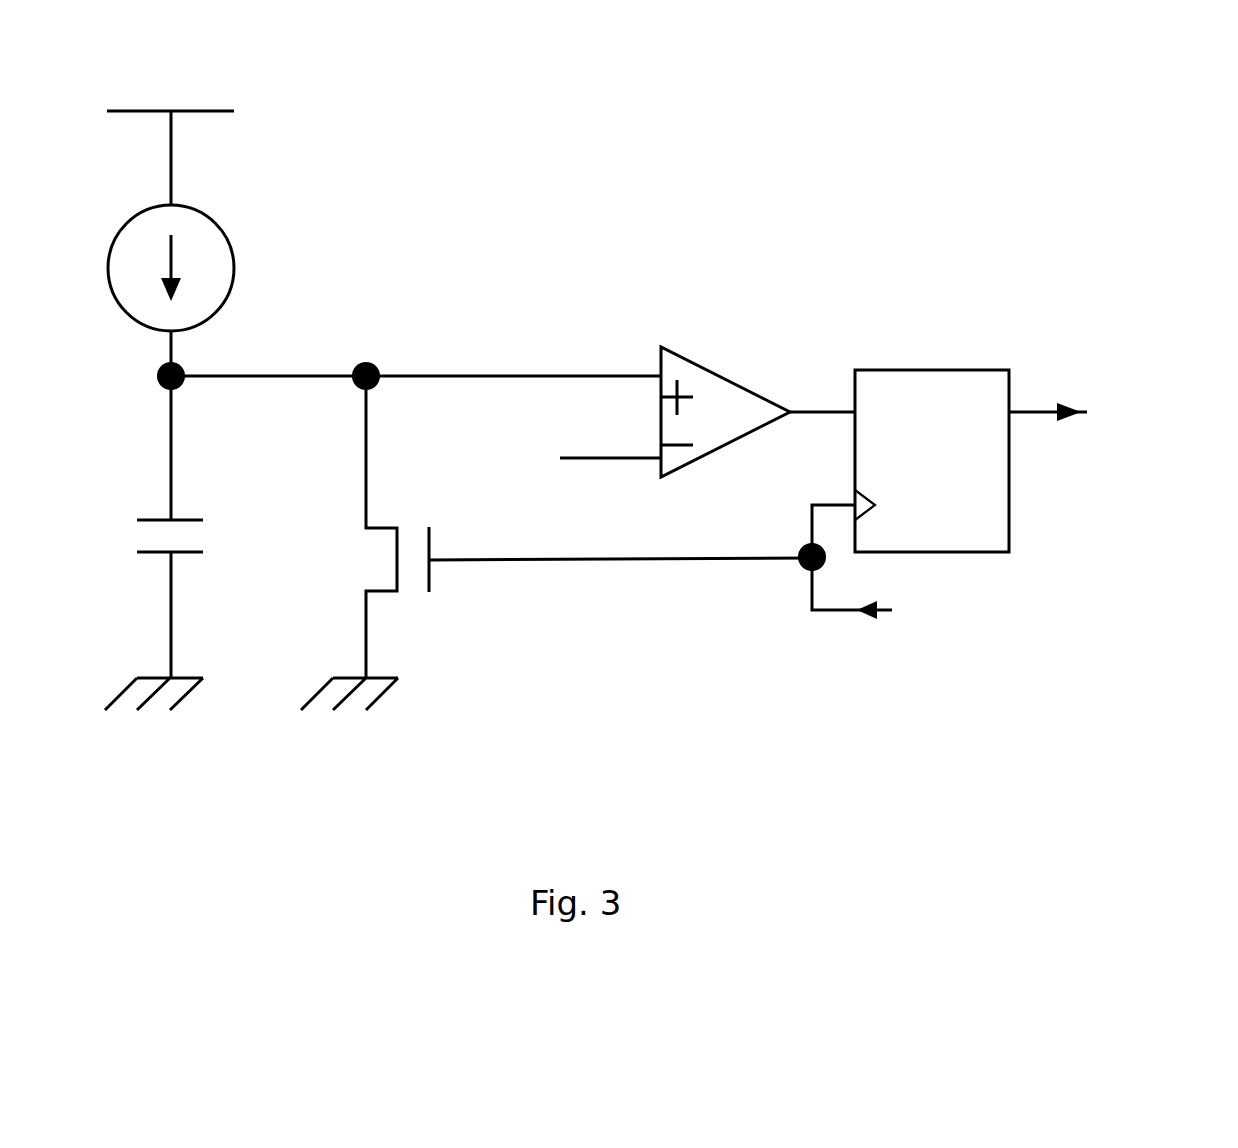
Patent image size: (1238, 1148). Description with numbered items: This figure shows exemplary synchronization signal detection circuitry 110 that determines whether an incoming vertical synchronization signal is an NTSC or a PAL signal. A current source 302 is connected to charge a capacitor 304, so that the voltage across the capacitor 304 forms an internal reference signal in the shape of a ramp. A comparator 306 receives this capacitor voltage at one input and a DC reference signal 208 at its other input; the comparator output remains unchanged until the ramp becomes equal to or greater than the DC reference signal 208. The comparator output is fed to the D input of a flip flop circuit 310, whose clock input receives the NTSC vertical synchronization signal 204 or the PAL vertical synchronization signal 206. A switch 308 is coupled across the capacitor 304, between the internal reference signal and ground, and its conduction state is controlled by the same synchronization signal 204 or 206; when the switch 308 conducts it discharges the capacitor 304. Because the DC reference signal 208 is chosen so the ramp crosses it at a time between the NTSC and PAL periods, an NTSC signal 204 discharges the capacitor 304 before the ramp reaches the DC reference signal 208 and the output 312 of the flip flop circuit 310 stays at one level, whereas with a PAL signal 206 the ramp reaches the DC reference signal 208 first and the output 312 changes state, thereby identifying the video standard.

The synchronization signal detection circuitry 110 is at (806, 172).
The current source 302 is at (220, 225).
The capacitor 304 is at (187, 515).
The comparator 306 is at (710, 370).
The switch 308 is at (366, 560).
The flip flop circuit 310 is at (922, 370).
The output of flip-flop 312 is at (1084, 415).
The DC reference signal Vpeak 208 is at (577, 458).
The NTSC vertical synchronization signal 204 is at (938, 570).
The PAL vertical synchronization signal 206 is at (938, 570).